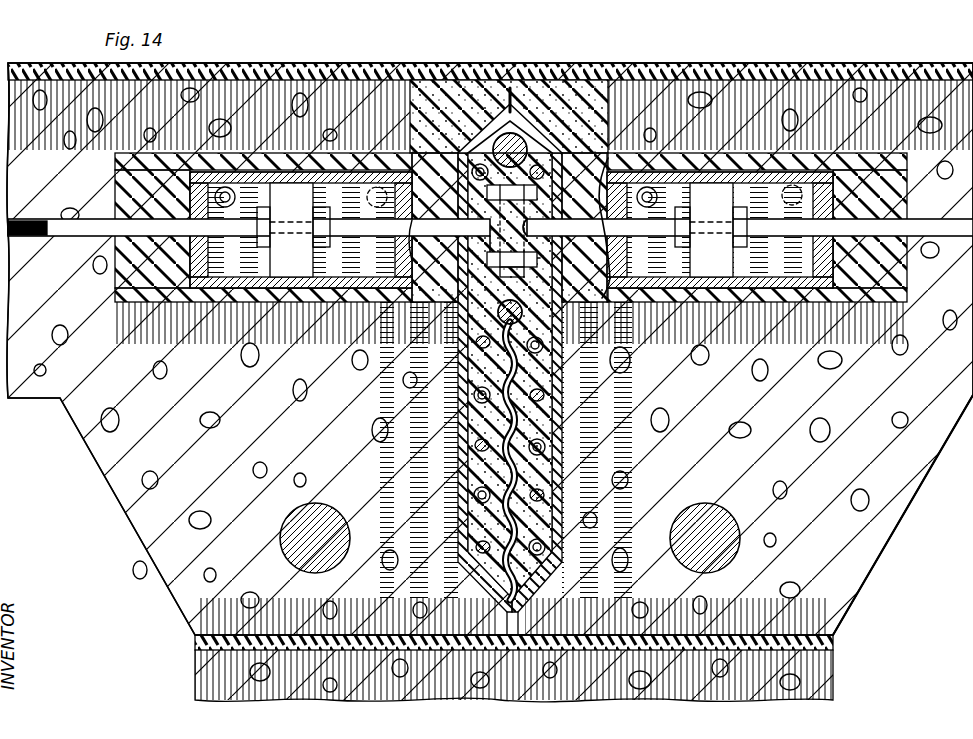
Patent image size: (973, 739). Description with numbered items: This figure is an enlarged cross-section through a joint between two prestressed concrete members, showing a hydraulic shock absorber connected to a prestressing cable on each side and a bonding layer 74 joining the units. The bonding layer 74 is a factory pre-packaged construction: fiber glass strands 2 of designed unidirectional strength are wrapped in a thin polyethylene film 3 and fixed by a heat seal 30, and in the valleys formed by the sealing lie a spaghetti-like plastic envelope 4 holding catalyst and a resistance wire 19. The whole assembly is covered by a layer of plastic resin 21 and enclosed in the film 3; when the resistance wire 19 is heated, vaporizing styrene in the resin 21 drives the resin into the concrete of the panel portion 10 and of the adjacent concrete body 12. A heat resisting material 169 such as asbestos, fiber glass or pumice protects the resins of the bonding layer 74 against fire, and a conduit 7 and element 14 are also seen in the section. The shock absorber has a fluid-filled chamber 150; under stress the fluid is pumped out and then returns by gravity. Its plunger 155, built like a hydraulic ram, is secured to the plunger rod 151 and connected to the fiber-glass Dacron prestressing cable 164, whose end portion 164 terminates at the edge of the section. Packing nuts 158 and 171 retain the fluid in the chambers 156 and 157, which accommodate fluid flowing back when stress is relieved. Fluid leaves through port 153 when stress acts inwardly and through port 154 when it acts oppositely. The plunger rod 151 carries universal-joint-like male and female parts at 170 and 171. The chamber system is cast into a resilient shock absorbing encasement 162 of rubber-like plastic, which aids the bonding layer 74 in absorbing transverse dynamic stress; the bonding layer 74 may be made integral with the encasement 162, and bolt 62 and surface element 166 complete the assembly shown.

The fiber glass strands 2 is at (463, 414).
The polyethylene film 3 is at (464, 532).
The plastic envelope containing catalyst 4 is at (462, 512).
The conduit 7 is at (290, 540).
The prestressed panel portion 10 is at (206, 582).
The concrete body 12 is at (840, 568).
The water stop 14 is at (540, 374).
The resistance wire 19 is at (462, 453).
The plastic resin 21 is at (342, 302).
The heat seal 30 is at (540, 492).
The bolt 62 is at (546, 254).
The bonding layer 74 is at (534, 80).
The chamber 150 is at (896, 148).
The plunger rod 151 is at (70, 236).
The port 153 is at (676, 145).
The port 154 is at (838, 168).
The plunger 155 is at (314, 204).
The chamber 156 is at (790, 198).
The chamber 157 is at (700, 302).
The packing nut 158 is at (220, 302).
The shock absorbing encasement 162 is at (400, 303).
The prestressing cable 164 is at (18, 224).
The joint block 166 is at (913, 62).
The heat resisting material 169 is at (600, 82).
The universal joint part 170 is at (580, 303).
The universal joint part / packing nut 171 is at (620, 216).